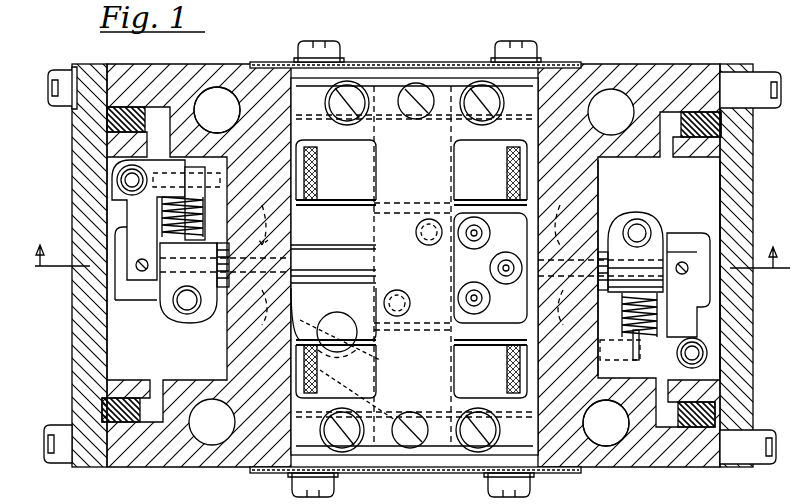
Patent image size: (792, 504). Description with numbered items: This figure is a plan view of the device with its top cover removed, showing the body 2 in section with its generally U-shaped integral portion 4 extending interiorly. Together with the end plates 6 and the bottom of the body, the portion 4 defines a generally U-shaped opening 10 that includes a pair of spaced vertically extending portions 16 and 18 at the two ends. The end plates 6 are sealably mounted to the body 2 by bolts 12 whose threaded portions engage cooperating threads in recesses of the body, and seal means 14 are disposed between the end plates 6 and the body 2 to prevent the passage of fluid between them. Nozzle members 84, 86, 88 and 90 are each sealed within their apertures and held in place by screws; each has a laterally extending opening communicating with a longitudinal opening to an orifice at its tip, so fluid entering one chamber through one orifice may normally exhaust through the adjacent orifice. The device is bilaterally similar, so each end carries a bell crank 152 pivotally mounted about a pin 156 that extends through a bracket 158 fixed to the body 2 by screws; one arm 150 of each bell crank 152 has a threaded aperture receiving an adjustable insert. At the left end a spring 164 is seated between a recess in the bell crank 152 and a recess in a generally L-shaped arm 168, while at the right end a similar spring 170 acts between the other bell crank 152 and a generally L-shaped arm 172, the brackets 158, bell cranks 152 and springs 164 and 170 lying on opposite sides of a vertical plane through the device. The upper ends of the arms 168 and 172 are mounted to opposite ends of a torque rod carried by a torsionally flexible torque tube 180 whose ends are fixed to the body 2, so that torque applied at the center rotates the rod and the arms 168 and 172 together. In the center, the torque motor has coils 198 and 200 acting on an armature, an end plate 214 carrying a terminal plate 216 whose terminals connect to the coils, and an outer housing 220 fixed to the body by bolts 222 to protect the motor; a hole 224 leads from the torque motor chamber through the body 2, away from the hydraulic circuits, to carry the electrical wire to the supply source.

The body 2 is at (620, 48).
The U-shaped integral portion 4 is at (611, 178).
The end plates 6 is at (82, 153).
The U-shaped opening 10 is at (708, 200).
The bolts 12 is at (768, 72).
The seal means 14 is at (107, 129).
The vertically extending portion 16 is at (140, 359).
The vertically extending portion 18 is at (704, 183).
The nozzle member 84 is at (256, 215).
The nozzle member 86 is at (255, 323).
The nozzle member 88 is at (569, 320).
The nozzle member 90 is at (567, 218).
The arm of bell crank 150 is at (143, 290).
The bell crank 152 is at (125, 210).
The pin 156 is at (118, 181).
The bracket 158 is at (195, 160).
The spring 164 is at (163, 218).
The L-shaped arm 168 is at (200, 305).
The spring 170 is at (655, 318).
The L-shaped arm 172 is at (638, 220).
The torque tube 180 is at (346, 243).
The coil 198 is at (498, 369).
The coil 200 is at (501, 174).
The end plate 214 is at (432, 169).
The terminal plate 216 is at (466, 262).
The outer housing 220 is at (445, 50).
The bolts 222 is at (332, 48).
The hole 224 is at (326, 318).